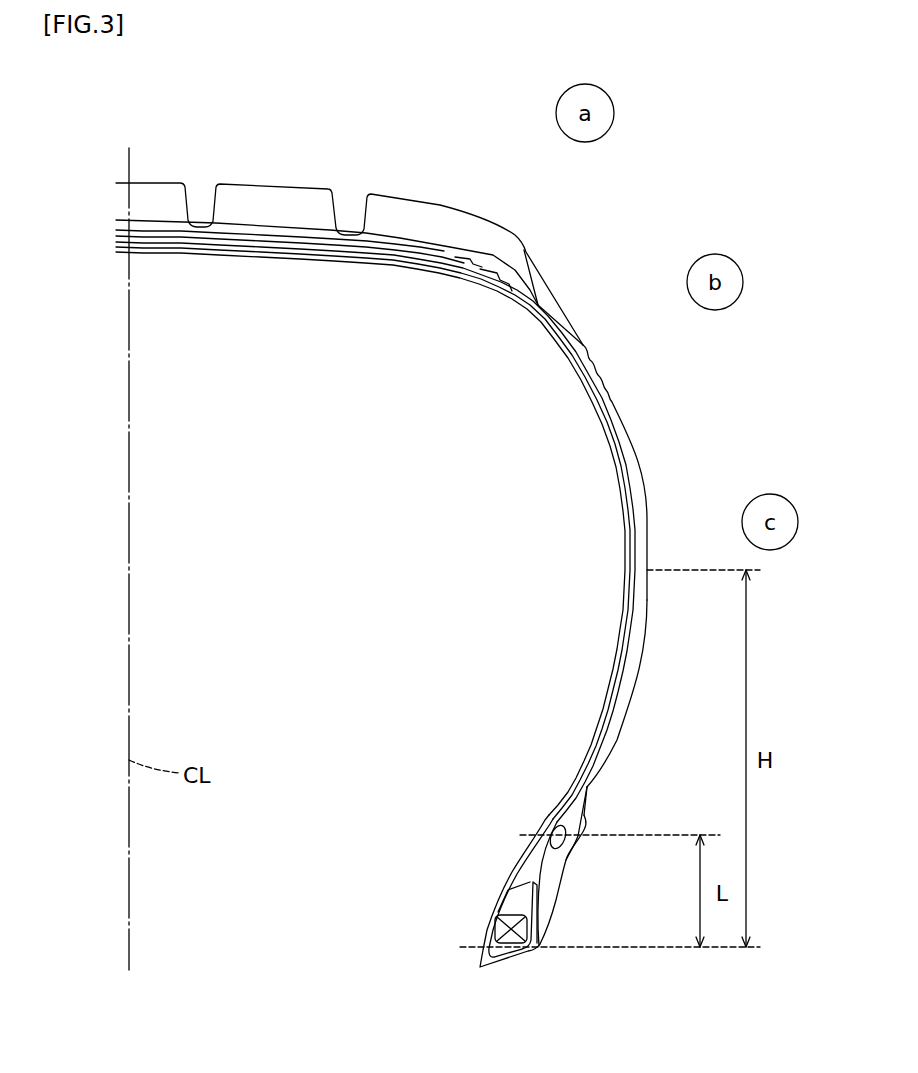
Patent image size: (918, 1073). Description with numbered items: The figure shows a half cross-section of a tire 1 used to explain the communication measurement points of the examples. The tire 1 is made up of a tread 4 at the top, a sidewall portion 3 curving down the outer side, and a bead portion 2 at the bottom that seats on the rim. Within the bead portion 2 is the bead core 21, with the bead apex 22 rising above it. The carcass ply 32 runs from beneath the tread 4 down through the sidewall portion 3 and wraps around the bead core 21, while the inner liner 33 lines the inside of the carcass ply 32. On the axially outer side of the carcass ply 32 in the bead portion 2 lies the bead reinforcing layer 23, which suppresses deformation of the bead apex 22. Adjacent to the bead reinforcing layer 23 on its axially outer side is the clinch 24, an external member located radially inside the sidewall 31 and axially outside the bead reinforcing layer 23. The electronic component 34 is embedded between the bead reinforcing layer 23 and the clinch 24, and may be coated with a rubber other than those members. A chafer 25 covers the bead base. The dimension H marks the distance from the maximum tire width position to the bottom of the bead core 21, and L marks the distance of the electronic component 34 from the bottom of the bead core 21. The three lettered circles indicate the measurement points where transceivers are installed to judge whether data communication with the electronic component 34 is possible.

The tire 1 is at (97, 170).
The bead portion 2 is at (592, 863).
The sidewall portion 3 is at (638, 428).
The tread 4 is at (485, 205).
The bead core 21 is at (495, 918).
The bead apex 22 is at (515, 903).
The bead reinforcing layer 23 is at (583, 793).
The clinch member 24 is at (550, 872).
The chafer 25 is at (505, 960).
The sidewall 31 is at (622, 713).
The carcass ply 32 is at (578, 773).
The inner liner 33 is at (597, 730).
The electronic component 34 is at (558, 828).